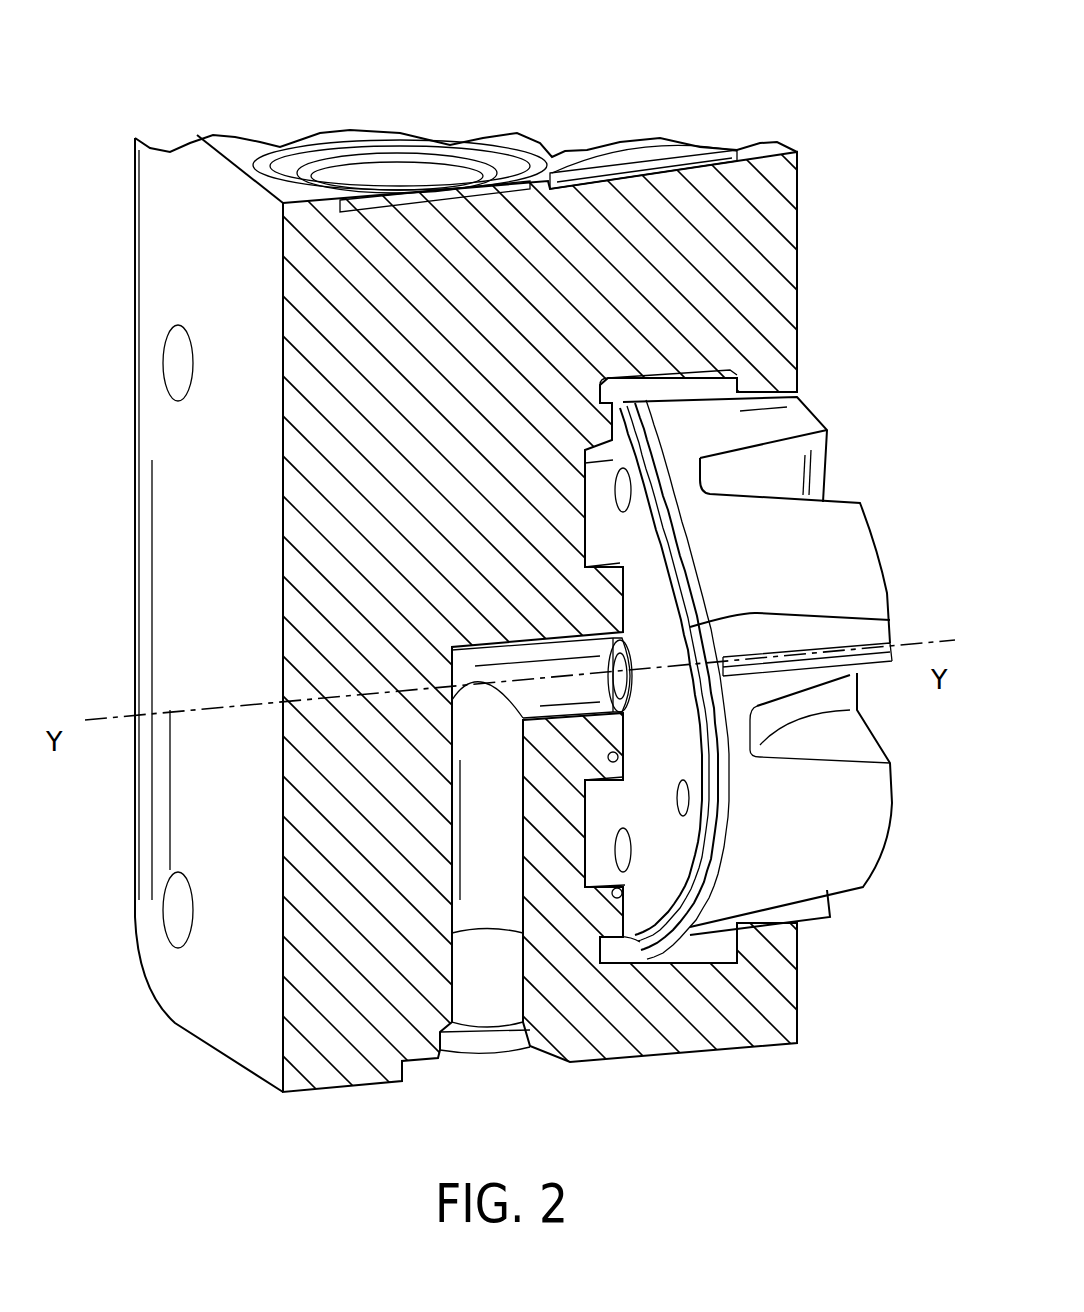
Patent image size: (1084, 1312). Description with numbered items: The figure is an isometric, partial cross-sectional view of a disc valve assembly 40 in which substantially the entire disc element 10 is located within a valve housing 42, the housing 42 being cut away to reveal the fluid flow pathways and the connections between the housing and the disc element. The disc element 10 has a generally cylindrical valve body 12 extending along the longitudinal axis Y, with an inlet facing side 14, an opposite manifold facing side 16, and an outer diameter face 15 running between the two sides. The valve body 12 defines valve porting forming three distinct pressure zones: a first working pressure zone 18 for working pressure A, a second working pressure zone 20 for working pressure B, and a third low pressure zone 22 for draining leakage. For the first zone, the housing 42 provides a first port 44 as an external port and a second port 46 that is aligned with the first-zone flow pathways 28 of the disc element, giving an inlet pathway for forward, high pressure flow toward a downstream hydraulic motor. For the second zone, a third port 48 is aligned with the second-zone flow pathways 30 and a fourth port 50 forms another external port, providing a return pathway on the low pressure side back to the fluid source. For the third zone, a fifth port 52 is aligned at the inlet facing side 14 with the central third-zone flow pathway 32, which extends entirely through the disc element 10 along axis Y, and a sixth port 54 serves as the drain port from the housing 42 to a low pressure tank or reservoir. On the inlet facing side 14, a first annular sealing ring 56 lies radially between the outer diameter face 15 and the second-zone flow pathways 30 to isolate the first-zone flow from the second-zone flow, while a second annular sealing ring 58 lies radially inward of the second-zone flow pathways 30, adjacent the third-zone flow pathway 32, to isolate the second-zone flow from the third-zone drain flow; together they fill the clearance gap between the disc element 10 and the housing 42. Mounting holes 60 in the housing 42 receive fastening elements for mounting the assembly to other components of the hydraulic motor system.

The disc element 10 is at (502, 761).
The valve body 12 is at (657, 930).
The inlet facing side 14 is at (382, 674).
The outer diameter face 15 is at (826, 845).
The manifold facing side 16 is at (824, 567).
The first working pressure zone 18 is at (745, 398).
The second working pressure zone 20 is at (613, 497).
The third low pressure zone 22 is at (357, 678).
The Zone 1 flow pathways 28 is at (838, 742).
The Zone 2 flow pathways 30 is at (620, 487).
The Zone 3 flow pathway 32 is at (620, 647).
The disc valve assembly 40 is at (542, 656).
The valve housing 42 is at (147, 200).
The first port 44 is at (650, 172).
The second port 46 is at (680, 378).
The third port 48 is at (617, 893).
The fourth port 50 is at (372, 178).
The fifth port 52 is at (470, 655).
The sixth port 54 is at (470, 1042).
The first annular sealing ring 56 is at (890, 620).
The second annular sealing ring 58 is at (610, 757).
The mounting holes 60 is at (172, 365).